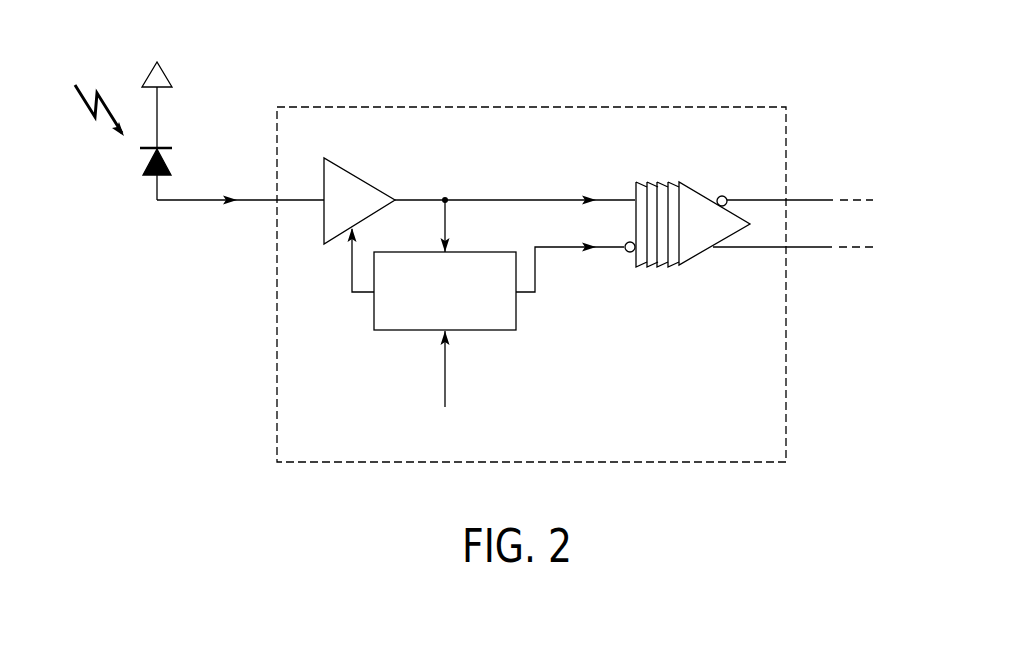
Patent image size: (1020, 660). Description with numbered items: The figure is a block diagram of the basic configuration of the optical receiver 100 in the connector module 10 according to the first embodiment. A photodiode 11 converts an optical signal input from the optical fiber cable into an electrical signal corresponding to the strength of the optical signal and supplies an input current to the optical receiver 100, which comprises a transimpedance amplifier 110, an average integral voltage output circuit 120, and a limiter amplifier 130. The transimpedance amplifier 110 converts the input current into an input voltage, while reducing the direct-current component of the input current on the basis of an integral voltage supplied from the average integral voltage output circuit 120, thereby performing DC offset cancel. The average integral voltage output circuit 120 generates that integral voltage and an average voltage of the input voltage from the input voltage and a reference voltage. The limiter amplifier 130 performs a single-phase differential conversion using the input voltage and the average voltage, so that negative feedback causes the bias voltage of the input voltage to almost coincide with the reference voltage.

The connector module 10 is at (247, 77).
The photodiode 11 is at (172, 166).
The optical receiver 100 is at (374, 107).
The transimpedance amplifier 110 is at (365, 182).
The average integral voltage output circuit 120 is at (488, 331).
The limiter amplifier 130 is at (648, 182).